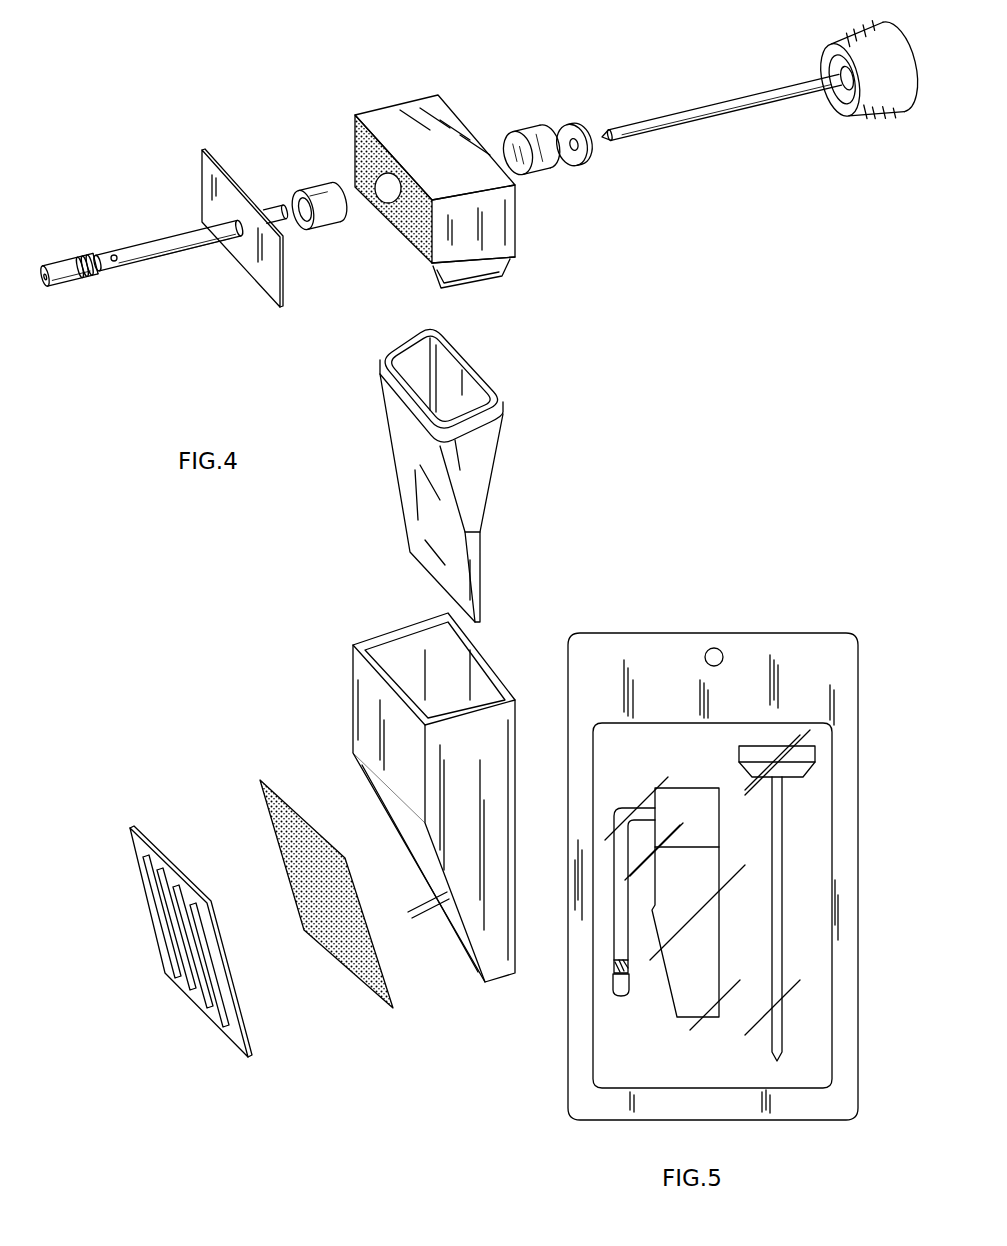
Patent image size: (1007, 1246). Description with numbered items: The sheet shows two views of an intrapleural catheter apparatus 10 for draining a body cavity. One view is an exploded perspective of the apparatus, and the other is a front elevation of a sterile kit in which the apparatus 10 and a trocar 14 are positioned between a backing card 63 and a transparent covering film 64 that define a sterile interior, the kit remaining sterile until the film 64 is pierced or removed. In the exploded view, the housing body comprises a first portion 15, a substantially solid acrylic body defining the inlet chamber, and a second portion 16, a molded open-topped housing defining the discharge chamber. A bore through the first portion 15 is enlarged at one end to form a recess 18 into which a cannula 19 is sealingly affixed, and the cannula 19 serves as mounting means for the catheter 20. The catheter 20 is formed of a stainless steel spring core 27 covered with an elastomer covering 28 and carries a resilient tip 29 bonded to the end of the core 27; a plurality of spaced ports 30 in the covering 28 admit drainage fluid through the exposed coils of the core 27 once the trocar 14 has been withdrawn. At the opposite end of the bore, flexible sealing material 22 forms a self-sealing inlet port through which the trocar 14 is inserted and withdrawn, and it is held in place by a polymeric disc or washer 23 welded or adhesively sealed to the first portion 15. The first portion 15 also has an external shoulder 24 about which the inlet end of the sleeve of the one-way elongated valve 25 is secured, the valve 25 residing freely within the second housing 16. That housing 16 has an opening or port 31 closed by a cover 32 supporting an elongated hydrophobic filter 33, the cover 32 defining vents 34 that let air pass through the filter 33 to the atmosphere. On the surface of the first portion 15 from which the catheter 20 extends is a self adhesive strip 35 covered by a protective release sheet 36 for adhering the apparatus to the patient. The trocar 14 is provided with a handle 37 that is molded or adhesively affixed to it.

In FIG. 5, the intrapleural catheter apparatus 10 is at (614, 938).
In FIG. 4, the trocar 14 is at (690, 111).
In FIG. 5, the trocar 14 is at (783, 850).
In FIG. 4, the first portion of housing body 15 is at (452, 162).
In FIG. 4, the second portion of housing body 16 is at (443, 819).
In FIG. 4, the recess 18 is at (367, 201).
In FIG. 4, the cannula 19 is at (323, 187).
In FIG. 4, the catheter 20 is at (160, 238).
In FIG. 4, the sealing material 22 is at (523, 130).
In FIG. 4, the disc or washer 23 is at (578, 124).
In FIG. 4, the external shoulder 24 is at (507, 275).
In FIG. 4, the one-way elongated valve 25 is at (500, 453).
In FIG. 4, the core 27 is at (80, 252).
In FIG. 4, the elastomer covering 28 is at (165, 258).
In FIG. 4, the tip 29 is at (67, 276).
In FIG. 4, the ports 30 is at (111, 255).
In FIG. 4, the opening or port 31 is at (447, 944).
In FIG. 4, the cover 32 is at (212, 951).
In FIG. 4, the hydrophobic filter 33 is at (352, 973).
In FIG. 4, the ports or vents 34 is at (224, 1028).
In FIG. 4, the self adhesive strip 35 is at (355, 140).
In FIG. 4, the protective release sheet 36 is at (203, 150).
In FIG. 4, the handle 37 is at (867, 118).
In FIG. 5, the backing card 63 is at (858, 674).
In FIG. 5, the transparent covering film 64 is at (832, 742).